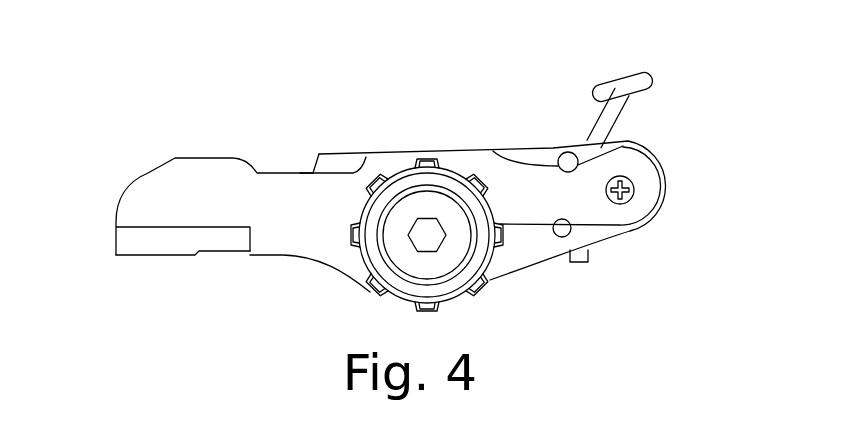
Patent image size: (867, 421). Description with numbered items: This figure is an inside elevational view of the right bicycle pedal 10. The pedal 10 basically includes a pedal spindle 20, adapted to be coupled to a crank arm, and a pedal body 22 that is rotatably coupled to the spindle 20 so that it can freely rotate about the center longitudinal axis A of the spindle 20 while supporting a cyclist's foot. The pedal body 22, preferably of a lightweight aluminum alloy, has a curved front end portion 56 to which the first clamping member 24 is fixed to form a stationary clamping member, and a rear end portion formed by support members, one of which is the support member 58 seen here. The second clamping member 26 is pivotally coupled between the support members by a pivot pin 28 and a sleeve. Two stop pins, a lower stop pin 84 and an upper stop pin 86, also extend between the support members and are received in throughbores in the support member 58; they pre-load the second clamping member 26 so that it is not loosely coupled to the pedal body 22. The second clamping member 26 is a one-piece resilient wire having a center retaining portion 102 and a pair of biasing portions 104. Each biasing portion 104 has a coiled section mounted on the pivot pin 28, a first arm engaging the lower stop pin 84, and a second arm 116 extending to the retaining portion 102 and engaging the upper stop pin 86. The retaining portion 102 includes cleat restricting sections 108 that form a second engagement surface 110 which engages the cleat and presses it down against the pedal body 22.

The bicycle pedal 10 is at (250, 92).
The curved front end portion 56 is at (130, 188).
The first clamping member 24 is at (203, 268).
The pedal body 22 is at (295, 243).
The pedal spindle 20 is at (452, 264).
The center longitudinal axis A is at (426, 237).
The lower stop pin 84 is at (560, 237).
The upper stop pin 86 is at (560, 154).
The pivot pin 28 is at (630, 197).
The support member 58 is at (647, 182).
The biasing portion 104 is at (662, 193).
The second arm 116 is at (626, 118).
The retaining portion 102 is at (658, 66).
The cleat restricting section 108 is at (602, 84).
The second engagement surface 110 is at (592, 107).
The second clamping member 26 is at (668, 97).